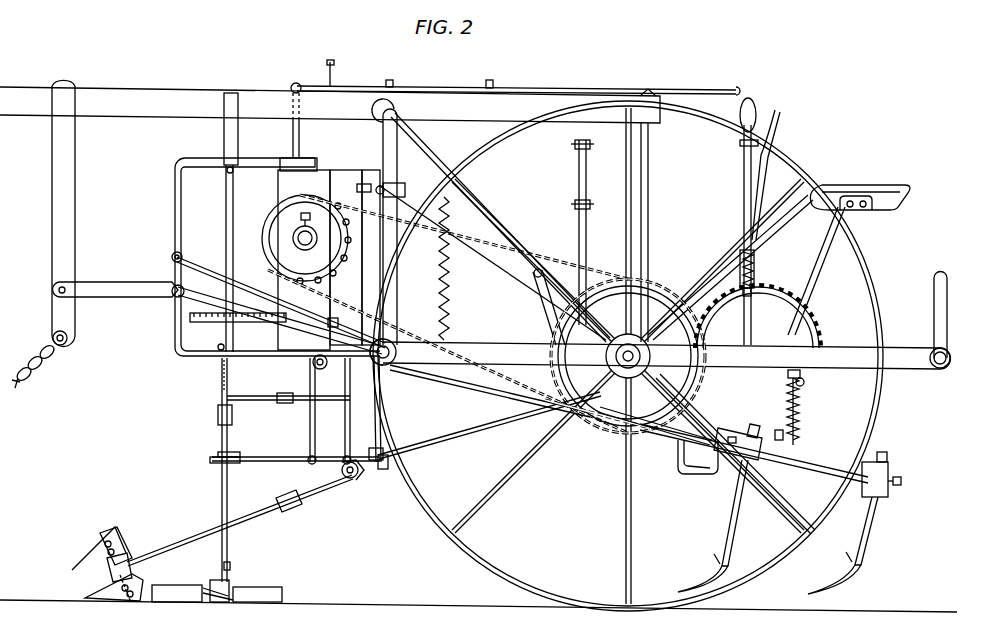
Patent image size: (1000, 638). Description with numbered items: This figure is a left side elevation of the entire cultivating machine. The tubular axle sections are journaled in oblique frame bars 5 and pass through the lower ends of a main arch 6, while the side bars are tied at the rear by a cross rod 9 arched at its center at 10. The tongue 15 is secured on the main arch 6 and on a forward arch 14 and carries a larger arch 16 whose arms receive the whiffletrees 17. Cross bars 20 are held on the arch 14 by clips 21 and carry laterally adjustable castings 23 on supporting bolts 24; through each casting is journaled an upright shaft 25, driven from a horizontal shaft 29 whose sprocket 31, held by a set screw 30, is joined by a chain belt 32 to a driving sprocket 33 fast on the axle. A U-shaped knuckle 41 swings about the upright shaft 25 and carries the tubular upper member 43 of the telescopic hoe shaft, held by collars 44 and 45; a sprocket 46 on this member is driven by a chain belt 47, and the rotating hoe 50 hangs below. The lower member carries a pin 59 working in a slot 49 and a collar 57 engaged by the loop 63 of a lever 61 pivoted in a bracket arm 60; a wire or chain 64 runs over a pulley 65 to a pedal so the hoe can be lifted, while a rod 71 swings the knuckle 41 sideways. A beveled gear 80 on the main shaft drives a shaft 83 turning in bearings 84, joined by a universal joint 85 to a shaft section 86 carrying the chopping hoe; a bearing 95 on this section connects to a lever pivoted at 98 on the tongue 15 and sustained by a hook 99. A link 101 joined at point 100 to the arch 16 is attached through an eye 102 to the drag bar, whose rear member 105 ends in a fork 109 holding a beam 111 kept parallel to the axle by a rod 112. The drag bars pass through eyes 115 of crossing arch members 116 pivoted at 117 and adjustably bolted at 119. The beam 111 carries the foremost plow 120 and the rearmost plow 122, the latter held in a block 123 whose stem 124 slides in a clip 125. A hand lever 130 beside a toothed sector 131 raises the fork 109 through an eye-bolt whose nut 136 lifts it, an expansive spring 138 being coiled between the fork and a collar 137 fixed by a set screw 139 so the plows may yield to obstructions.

The oblique frame bars 5 is at (480, 212).
The main arch 6 is at (649, 190).
The cross rod 9 is at (948, 352).
The arch of cross rod 10 is at (947, 285).
The front arch 14 is at (392, 161).
The tongue 15 is at (475, 99).
The larger arch 16 is at (52, 186).
The whiffletrees 17 is at (30, 366).
The cross bars 20 is at (397, 182).
The clips 21 is at (402, 193).
The castings 23 is at (340, 170).
The supporting bolts 24 is at (362, 176).
The upright shaft 25 is at (299, 154).
The horizontal shaft 29 is at (305, 244).
The set screw 30 is at (300, 214).
The sprocket 31 is at (448, 314).
The chain belt 32 is at (452, 230).
The driving sprocket 33 is at (555, 312).
The knuckle 41 is at (264, 157).
The tubular upper member of hoe shaft 43 is at (224, 137).
The collar 44 is at (183, 162).
The collar 45 is at (200, 353).
The sprocket 46 is at (205, 322).
The chain belt 47 is at (262, 325).
The slot 49 is at (222, 398).
The hoe 50 is at (262, 587).
The collar 57 is at (220, 454).
The pin 59 is at (230, 403).
The bracket arm 60 is at (367, 409).
The lever 61 is at (260, 457).
The loop 63 is at (210, 459).
The flexible wire or chain 64 is at (345, 410).
The pulley 65 is at (325, 371).
The rod 71 is at (203, 251).
The beveled gear 80 is at (660, 292).
The shaft 83 is at (478, 425).
The bearings 84 is at (533, 400).
The crank 85 is at (352, 479).
The shaft section 86 is at (240, 518).
The bearing 95 is at (295, 504).
The pivot 98 is at (490, 85).
The hook or support 99 is at (334, 68).
The connection point 100 is at (58, 292).
The link 101 is at (108, 282).
The eye 102 is at (176, 297).
The rear member of drag bar 105 is at (678, 455).
The fork 109 is at (725, 428).
The beam 111 is at (772, 470).
The rod 112 is at (652, 440).
The eyes 115 is at (583, 420).
The arch members 116 is at (586, 240).
The pivot 117 is at (595, 205).
The bolt 119 is at (595, 148).
The foremost plow 120 is at (714, 560).
The rearmost plow 122 is at (835, 570).
The block 123 is at (890, 470).
The stem 124 is at (818, 462).
The clip 125 is at (779, 430).
The hand lever 130 is at (744, 208).
The toothed sector 131 is at (765, 290).
The nut 136 is at (779, 462).
The collar 137 is at (821, 390).
The expansive spring 138 is at (796, 420).
The set screw 139 is at (802, 374).